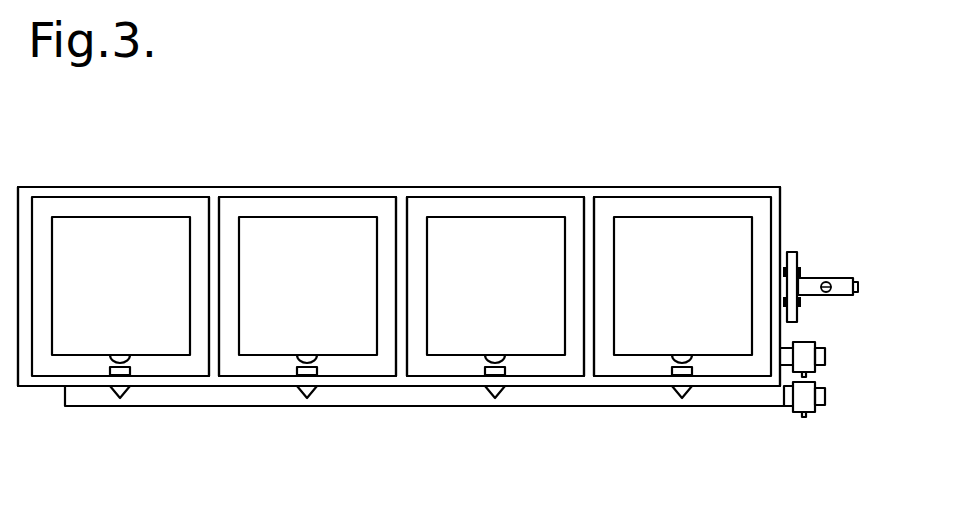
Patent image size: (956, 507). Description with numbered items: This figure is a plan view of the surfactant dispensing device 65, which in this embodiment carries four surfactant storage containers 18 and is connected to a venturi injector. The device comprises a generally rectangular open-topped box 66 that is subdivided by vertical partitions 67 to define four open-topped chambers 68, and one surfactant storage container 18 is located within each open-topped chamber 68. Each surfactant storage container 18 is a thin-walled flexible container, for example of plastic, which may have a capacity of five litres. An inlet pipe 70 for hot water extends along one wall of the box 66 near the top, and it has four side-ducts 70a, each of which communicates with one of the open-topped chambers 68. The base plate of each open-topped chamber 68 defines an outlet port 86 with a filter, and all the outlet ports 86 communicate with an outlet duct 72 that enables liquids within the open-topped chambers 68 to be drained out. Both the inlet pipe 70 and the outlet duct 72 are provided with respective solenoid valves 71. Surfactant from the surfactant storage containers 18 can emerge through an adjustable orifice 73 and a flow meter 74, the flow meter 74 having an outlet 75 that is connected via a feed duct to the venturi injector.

The surfactant dispensing device 65 is at (737, 128).
The open-topped box 66 is at (750, 195).
The vertical partitions 67 is at (400, 233).
The open-topped chambers 68 is at (142, 203).
The surfactant storage container 18 is at (254, 247).
The outlet port 86 is at (120, 352).
The inlet pipe 70 is at (568, 393).
The side-ducts 70a is at (493, 375).
The adjustable orifice 73 is at (797, 251).
The flow meter 74 is at (838, 282).
The outlet 75 is at (858, 287).
The outlet duct 72 is at (783, 353).
The solenoid valves 71 is at (807, 358).